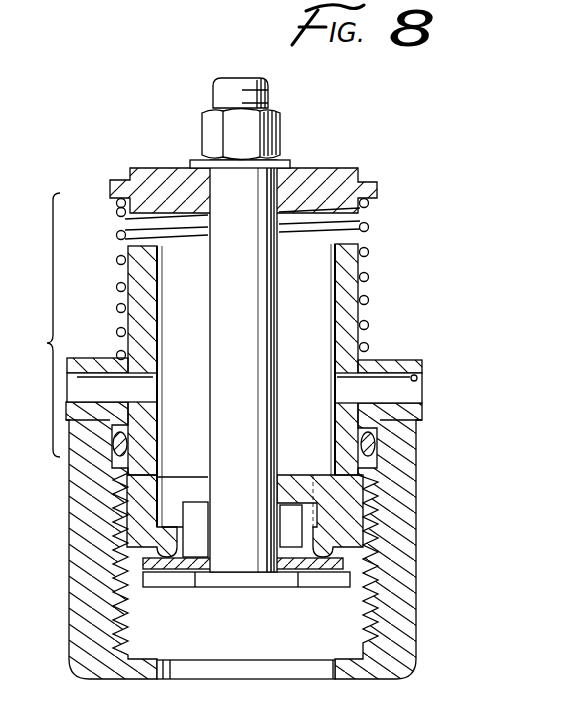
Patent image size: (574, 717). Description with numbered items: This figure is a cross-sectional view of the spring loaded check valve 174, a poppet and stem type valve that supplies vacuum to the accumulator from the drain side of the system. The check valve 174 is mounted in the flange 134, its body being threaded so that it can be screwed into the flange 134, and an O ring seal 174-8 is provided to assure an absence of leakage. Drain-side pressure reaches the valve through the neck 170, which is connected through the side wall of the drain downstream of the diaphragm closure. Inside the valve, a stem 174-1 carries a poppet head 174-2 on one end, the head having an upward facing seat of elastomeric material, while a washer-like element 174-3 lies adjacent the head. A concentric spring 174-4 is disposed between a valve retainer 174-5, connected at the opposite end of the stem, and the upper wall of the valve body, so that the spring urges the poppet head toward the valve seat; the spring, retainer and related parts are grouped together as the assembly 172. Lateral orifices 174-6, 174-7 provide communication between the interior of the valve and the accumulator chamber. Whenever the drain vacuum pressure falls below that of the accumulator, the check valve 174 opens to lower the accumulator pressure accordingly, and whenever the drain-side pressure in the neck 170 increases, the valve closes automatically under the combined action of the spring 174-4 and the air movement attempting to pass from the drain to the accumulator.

The flange 134 is at (420, 476).
The neck 170 is at (255, 648).
The actuator assembly 172 is at (32, 325).
The spring loaded check valve 174 is at (248, 279).
The stem rod 174-1 is at (256, 318).
The poppet head 174-2 is at (223, 585).
The washer 174-3 is at (346, 566).
The concentric spring 174-4 is at (118, 306).
The valve retainer 174-5 is at (320, 168).
The lateral orifice 174-6 is at (62, 380).
The lateral orifice 174-7 is at (449, 342).
The O ring seal 174-8 is at (76, 478).